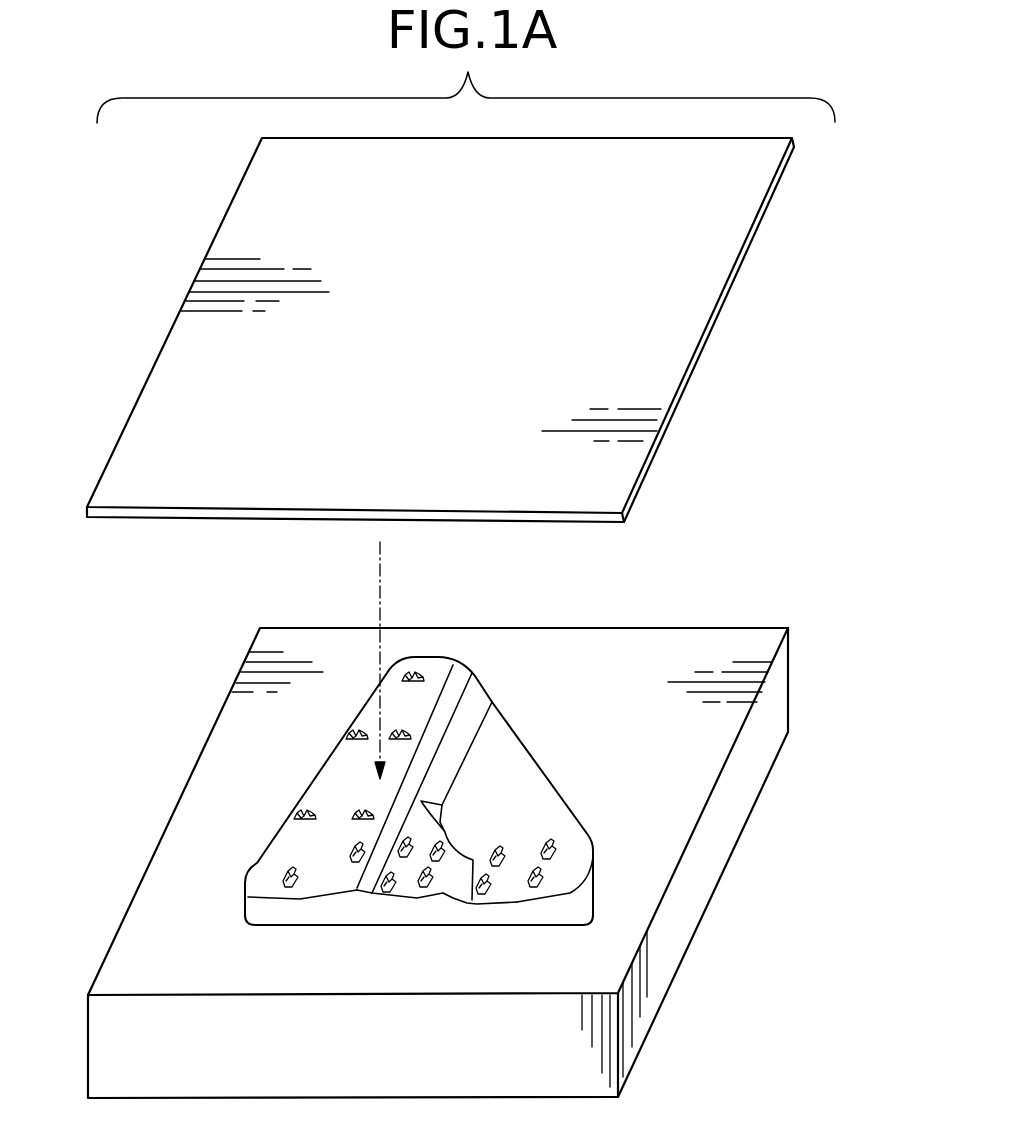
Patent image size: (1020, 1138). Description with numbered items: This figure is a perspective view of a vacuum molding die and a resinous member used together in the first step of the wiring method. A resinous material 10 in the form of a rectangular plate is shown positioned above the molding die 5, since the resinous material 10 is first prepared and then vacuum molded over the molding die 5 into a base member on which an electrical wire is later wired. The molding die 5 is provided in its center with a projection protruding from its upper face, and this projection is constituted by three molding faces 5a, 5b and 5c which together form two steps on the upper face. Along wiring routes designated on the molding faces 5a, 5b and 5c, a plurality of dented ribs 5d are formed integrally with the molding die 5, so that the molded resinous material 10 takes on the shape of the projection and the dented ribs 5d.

The resinous material 10 is at (704, 345).
The molding die 5 is at (689, 956).
The molding face 5a is at (285, 845).
The molding face 5b is at (403, 893).
The molding face 5c is at (533, 800).
The dented ribs 5d is at (421, 672).